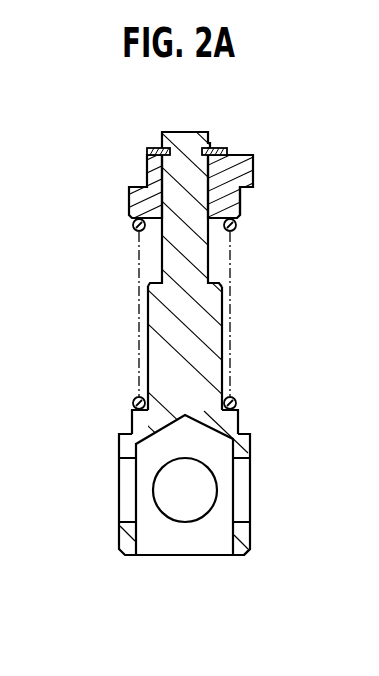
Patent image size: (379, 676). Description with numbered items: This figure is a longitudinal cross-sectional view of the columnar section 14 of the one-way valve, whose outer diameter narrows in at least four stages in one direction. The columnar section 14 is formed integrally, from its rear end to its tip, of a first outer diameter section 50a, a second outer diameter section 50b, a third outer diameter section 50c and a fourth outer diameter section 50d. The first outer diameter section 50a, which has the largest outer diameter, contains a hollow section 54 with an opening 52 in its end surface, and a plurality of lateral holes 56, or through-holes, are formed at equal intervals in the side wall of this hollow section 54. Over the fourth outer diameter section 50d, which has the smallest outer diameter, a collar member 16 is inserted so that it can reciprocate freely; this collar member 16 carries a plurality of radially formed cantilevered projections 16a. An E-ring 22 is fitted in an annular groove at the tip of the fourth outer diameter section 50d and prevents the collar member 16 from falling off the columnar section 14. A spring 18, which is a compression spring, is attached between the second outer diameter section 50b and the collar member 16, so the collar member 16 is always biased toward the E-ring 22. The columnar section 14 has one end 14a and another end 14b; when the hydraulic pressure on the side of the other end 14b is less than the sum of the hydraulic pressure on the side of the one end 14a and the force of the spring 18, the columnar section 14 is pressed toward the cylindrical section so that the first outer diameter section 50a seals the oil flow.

The columnar section 14 is at (58, 103).
The one end 14a is at (180, 132).
The another end 14b is at (216, 557).
The collar member 16 is at (242, 152).
The cantilevered projections 16a is at (255, 175).
The spring 18 is at (232, 262).
The E-ring 22 is at (157, 147).
The first outer diameter section 50a is at (127, 536).
The second outer diameter section 50b is at (143, 419).
The third outer diameter section 50c is at (175, 323).
The fourth outer diameter section 50d is at (172, 256).
The opening 52 is at (200, 557).
The hollow section 54 is at (208, 528).
The lateral holes 56 is at (130, 487).